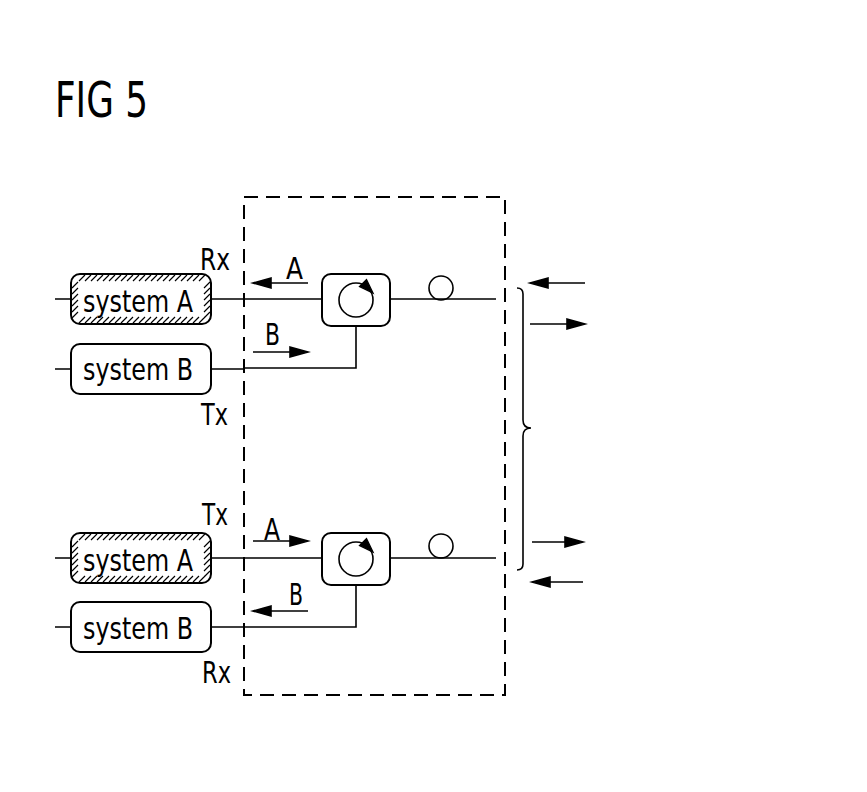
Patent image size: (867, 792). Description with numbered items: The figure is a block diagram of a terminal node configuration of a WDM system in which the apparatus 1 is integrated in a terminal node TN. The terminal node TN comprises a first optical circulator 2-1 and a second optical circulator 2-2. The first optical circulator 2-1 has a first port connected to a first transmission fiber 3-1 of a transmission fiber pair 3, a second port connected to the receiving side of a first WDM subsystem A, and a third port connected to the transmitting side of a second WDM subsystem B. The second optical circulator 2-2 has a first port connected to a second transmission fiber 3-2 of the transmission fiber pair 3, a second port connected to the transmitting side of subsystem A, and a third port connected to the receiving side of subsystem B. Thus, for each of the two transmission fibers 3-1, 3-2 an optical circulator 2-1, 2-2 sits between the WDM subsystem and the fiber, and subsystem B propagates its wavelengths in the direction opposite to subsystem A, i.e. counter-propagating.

The apparatus 1 is at (371, 197).
The first optical circulator 2-1 is at (348, 284).
The second optical circulator 2-2 is at (348, 543).
The first transmission fiber 3-1 is at (441, 276).
The second transmission fiber 3-2 is at (441, 534).
The transmission fiber pair 3 is at (533, 429).
The terminal node TN is at (584, 166).